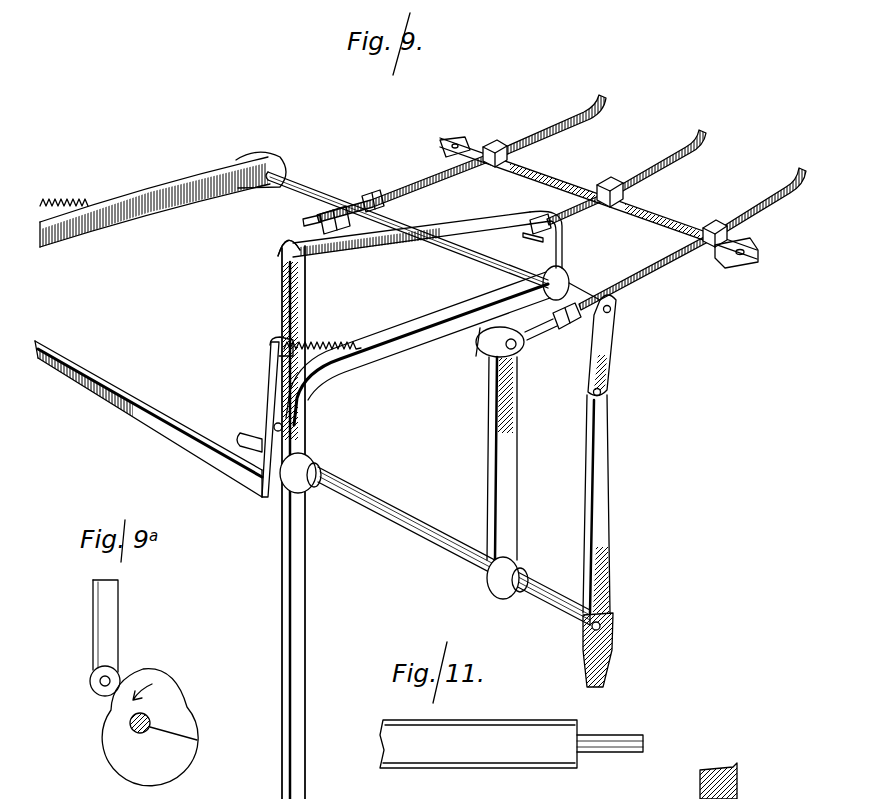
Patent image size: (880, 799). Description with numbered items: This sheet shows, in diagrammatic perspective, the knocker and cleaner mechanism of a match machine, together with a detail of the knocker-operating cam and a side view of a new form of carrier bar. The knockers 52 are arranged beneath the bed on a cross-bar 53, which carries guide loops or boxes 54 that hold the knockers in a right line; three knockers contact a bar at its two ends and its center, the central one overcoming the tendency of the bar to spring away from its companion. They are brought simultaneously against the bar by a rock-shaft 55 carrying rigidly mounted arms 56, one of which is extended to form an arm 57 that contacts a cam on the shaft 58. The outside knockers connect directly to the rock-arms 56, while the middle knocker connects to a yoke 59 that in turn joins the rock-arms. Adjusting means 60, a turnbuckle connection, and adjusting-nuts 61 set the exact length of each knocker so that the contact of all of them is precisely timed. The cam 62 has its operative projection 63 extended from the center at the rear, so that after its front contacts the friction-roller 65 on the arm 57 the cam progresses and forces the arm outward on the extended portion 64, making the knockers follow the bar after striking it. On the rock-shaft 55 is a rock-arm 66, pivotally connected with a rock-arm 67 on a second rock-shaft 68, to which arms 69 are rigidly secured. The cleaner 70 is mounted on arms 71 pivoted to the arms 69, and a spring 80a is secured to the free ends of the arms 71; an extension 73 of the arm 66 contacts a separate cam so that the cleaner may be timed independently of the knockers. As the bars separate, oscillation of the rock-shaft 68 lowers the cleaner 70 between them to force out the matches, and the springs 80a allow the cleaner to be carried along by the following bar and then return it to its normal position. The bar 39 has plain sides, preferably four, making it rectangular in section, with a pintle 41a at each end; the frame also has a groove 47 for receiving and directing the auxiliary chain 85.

In FIG. 11, the bar 39 is at (478, 744).
In FIG. 11, the pintle 41a is at (638, 735).
In FIG. 11, the groove 47 is at (692, 781).
In FIG. 9, the knocker 52 is at (600, 112).
In FIG. 9, the cross-bar 53 is at (730, 263).
In FIG. 9, the guide loop 54 is at (498, 143).
In FIG. 9, the rock-shaft 55 is at (400, 512).
In FIG. 9, the rock-arm 56 is at (518, 482).
In FIG. 9, the arm 57 is at (306, 427).
In FIG. 9A, the arm 57 is at (94, 613).
In FIG. 9A, the shaft 58 is at (189, 745).
In FIG. 9, the yoke 59 is at (598, 198).
In FIG. 9, the adjusting means 60 is at (368, 195).
In FIG. 9, the adjusting-nut 61 is at (320, 218).
In FIG. 9A, the cam 62 is at (131, 738).
In FIG. 9A, the operative projection 63 is at (160, 692).
In FIG. 9A, the extended portion 64 is at (143, 670).
In FIG. 9A, the friction-roller 65 is at (91, 692).
In FIG. 9, the rock-arm 66 is at (609, 455).
In FIG. 9, the rock-arm 67 is at (614, 330).
In FIG. 9, the rock-shaft 68 is at (314, 193).
In FIG. 9, the arm 69 is at (397, 358).
In FIG. 9, the cleaner 70 is at (113, 408).
In FIG. 9, the arm 71 is at (271, 368).
In FIG. 9, the extension 73 is at (614, 650).
In FIG. 9, the spring 80a is at (76, 188).
In FIG. 11, the auxiliary chain 85 is at (613, 787).